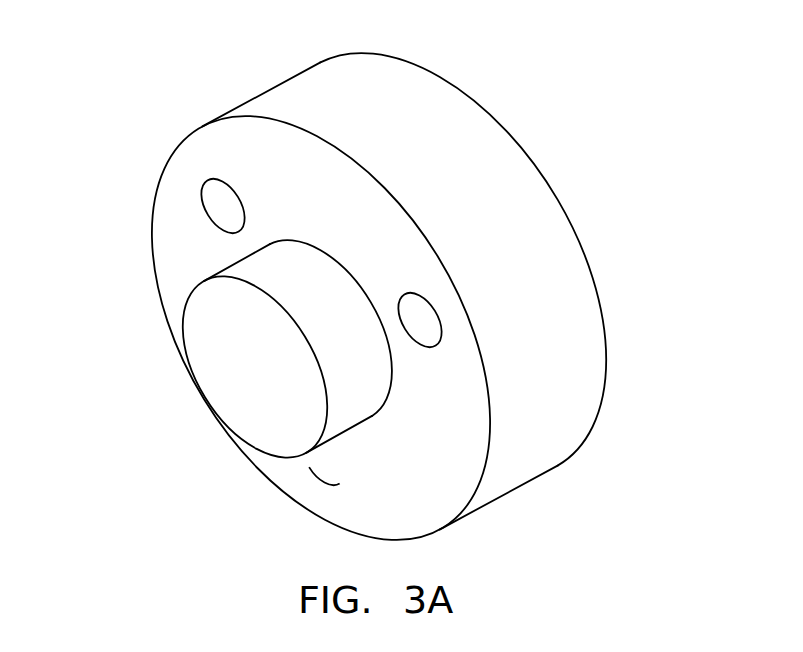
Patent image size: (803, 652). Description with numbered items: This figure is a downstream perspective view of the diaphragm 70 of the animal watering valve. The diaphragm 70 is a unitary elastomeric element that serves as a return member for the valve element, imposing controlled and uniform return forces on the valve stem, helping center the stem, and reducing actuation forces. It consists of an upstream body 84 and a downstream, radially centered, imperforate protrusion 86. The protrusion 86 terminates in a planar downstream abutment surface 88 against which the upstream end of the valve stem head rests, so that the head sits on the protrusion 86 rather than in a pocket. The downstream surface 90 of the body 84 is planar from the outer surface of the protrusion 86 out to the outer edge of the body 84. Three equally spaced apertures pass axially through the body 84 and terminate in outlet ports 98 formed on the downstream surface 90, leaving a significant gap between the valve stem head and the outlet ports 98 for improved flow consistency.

The diaphragm 70 is at (373, 304).
The body 84 is at (549, 216).
The downstream surface 90 is at (298, 155).
The protrusion 86 is at (221, 361).
The abutment surface 88 is at (198, 322).
The outlet ports 98 is at (202, 195).